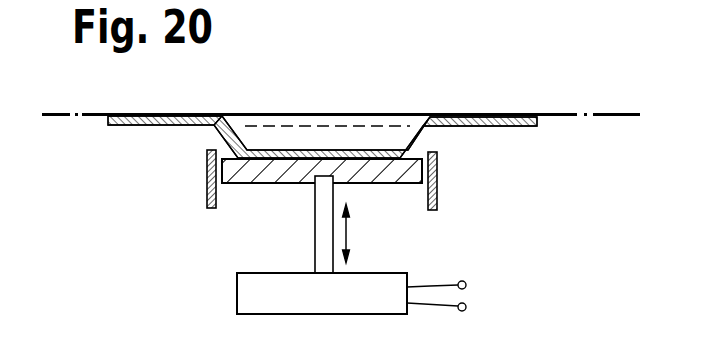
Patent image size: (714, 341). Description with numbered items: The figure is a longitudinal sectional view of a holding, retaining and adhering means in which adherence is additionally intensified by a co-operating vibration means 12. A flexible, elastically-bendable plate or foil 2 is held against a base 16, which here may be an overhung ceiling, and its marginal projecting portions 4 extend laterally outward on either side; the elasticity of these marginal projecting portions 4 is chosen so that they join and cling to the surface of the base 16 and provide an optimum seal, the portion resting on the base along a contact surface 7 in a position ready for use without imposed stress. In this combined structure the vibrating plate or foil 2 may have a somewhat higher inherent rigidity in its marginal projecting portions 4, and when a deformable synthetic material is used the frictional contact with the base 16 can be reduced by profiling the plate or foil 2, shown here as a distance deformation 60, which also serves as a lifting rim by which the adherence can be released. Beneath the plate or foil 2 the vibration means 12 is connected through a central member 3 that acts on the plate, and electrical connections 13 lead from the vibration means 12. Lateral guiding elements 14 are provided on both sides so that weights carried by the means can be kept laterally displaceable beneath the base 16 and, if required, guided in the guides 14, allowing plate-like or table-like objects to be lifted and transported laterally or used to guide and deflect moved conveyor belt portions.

The base 16 is at (52, 113).
The distance deformation 60 is at (245, 132).
The contact surface 7 is at (365, 113).
The plate or foil 2 is at (420, 120).
The marginal projecting portion 4 is at (136, 127).
The lateral guiding elements 14 is at (206, 200).
The plunger 3 is at (322, 228).
The vibration means 12 is at (237, 288).
The electrical terminals 13 is at (470, 295).